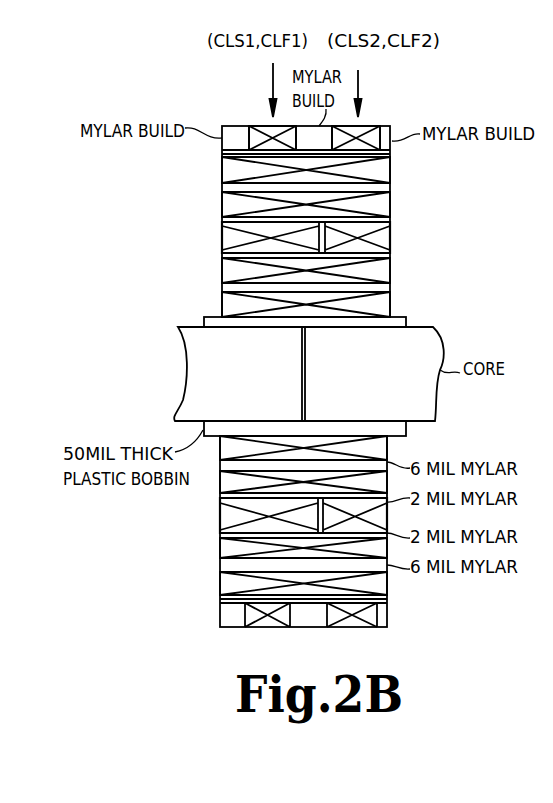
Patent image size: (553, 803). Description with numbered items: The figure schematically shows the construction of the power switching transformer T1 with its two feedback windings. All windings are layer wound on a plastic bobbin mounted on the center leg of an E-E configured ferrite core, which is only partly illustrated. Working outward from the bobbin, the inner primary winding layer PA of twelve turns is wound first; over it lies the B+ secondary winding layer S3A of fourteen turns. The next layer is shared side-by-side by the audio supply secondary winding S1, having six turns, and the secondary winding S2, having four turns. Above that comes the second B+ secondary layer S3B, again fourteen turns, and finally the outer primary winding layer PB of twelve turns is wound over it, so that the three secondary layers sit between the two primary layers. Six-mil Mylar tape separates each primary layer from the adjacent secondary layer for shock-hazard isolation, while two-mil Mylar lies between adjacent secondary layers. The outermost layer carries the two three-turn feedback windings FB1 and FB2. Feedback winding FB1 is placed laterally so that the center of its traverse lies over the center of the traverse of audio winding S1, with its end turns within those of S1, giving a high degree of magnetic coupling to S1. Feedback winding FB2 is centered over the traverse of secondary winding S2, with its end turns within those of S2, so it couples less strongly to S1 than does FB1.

The power switching transformer T1 is at (428, 203).
The primary winding layer PB is at (222, 168).
The primary winding layer PA is at (222, 303).
The audio supply secondary winding S1 is at (222, 239).
The secondary winding S2 is at (390, 236).
The B+ secondary winding layer S3A is at (222, 271).
The B+ secondary winding layer S3B is at (222, 204).
The feedback winding FB1 is at (270, 125).
The feedback winding FB2 is at (375, 126).